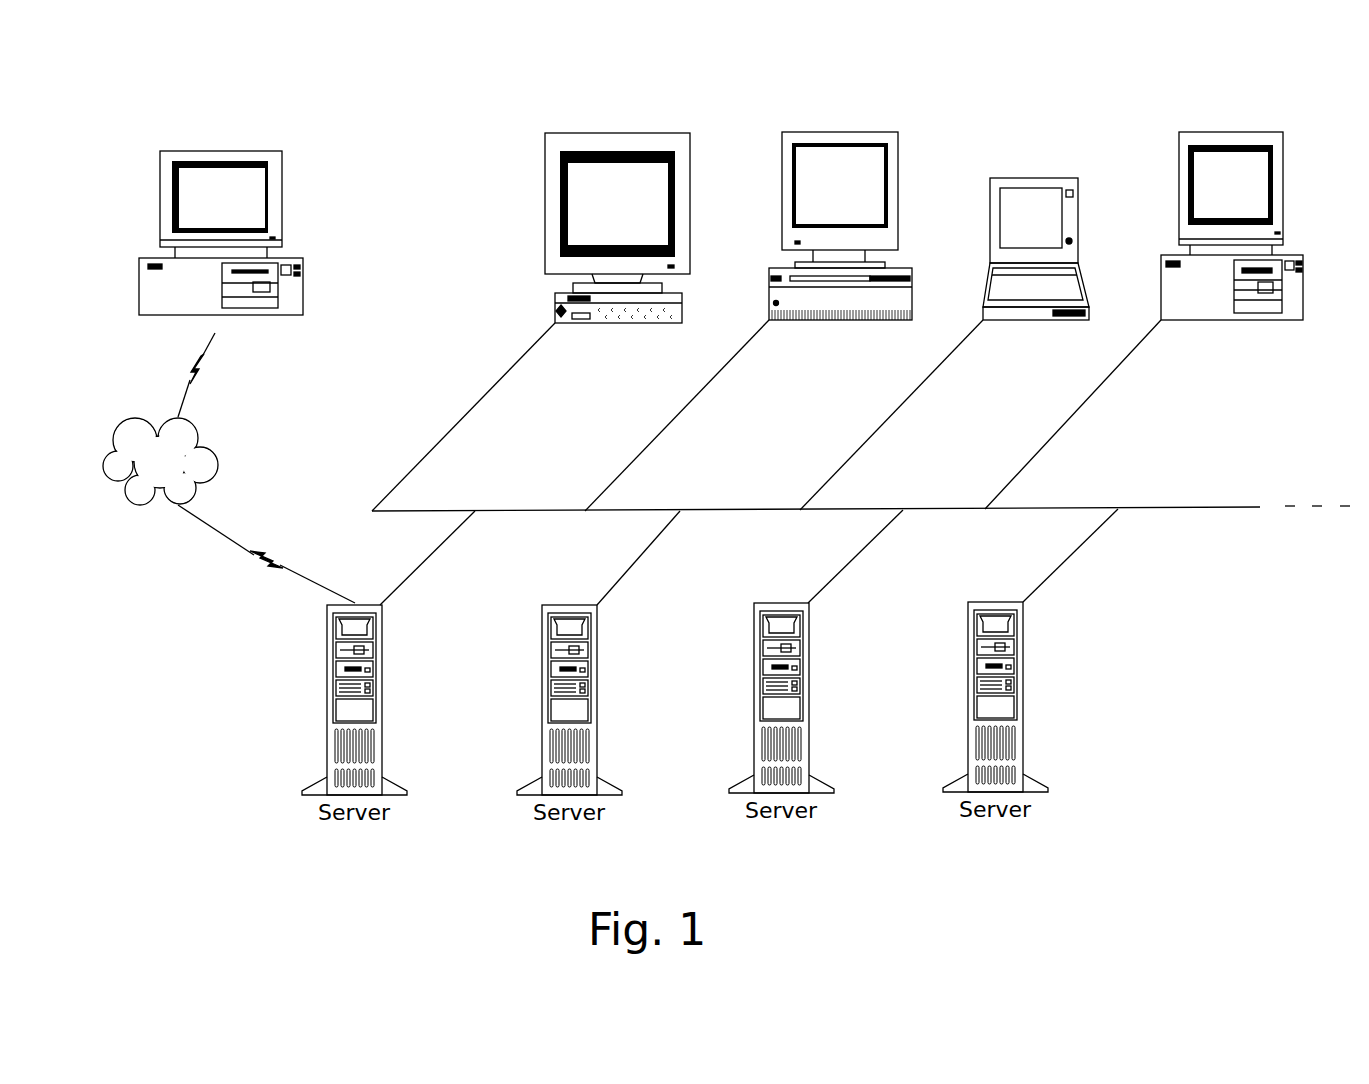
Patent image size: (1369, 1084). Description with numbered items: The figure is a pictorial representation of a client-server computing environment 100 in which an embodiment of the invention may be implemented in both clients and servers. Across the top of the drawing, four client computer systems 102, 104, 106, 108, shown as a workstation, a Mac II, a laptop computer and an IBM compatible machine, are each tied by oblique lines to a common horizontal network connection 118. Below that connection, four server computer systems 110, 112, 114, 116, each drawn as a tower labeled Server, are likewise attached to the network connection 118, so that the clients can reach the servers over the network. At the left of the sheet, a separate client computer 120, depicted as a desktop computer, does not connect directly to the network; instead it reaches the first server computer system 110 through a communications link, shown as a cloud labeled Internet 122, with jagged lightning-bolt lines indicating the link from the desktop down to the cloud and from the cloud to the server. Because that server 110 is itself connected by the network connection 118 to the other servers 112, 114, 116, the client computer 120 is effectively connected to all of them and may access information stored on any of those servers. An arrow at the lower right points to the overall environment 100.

The computing environment 100 is at (1232, 660).
The client computer system 102 is at (615, 133).
The client computer system 104 is at (838, 132).
The client computer system 106 is at (1035, 178).
The client computer system 108 is at (1230, 132).
The server computer system 110 is at (382, 700).
The server computer system 112 is at (597, 700).
The server computer system 114 is at (809, 700).
The server computer system 116 is at (1023, 700).
The network connection 118 is at (925, 510).
The client computer 120 is at (222, 151).
The Internet 122 is at (219, 461).